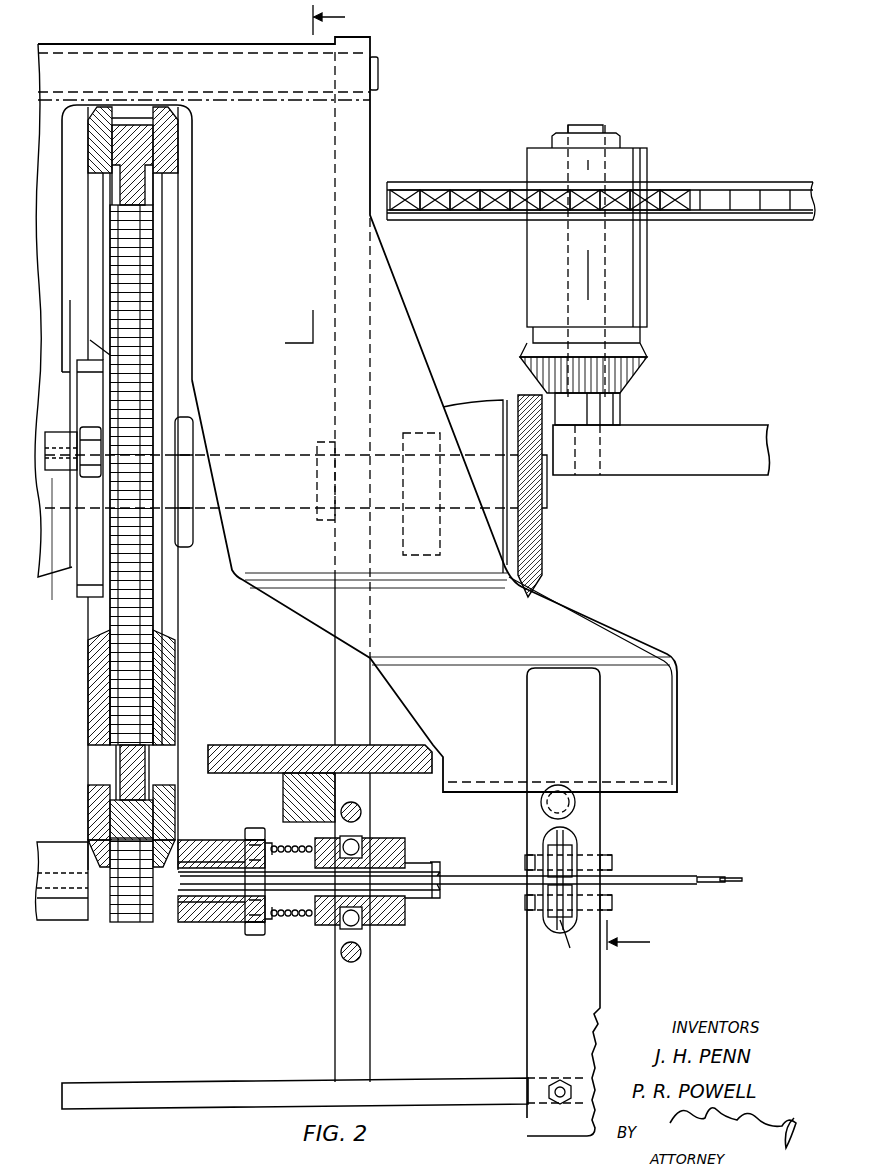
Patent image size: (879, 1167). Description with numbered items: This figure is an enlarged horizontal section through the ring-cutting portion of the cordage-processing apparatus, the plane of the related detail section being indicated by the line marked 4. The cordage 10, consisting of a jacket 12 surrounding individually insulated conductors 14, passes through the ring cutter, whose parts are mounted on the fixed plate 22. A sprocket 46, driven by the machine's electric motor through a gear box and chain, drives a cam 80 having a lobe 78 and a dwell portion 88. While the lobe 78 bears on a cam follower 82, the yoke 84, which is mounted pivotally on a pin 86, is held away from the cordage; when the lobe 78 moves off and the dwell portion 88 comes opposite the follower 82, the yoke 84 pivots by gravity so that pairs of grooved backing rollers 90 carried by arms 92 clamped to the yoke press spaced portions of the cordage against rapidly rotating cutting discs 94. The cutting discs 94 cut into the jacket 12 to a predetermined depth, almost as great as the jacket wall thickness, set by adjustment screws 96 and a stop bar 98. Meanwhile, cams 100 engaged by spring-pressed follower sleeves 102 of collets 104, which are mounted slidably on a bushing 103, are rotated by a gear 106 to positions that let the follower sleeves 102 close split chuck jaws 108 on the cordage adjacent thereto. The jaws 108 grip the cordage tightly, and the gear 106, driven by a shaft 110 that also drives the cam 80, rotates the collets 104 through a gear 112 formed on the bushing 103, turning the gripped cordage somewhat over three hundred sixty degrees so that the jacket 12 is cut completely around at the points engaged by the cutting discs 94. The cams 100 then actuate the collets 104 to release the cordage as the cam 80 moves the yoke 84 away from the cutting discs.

The section line 4- 4 is at (490, 479).
The cordage 10 is at (633, 874).
The jacket 12 is at (682, 876).
The individually insulated conductors 14 is at (725, 877).
The fixed plate 22 is at (240, 745).
The sprocket 46 is at (425, 185).
The lobe 78 is at (80, 360).
The cam 80 is at (74, 583).
The cam follower 82 is at (92, 428).
The yoke 84 is at (550, 602).
The pin 86 is at (378, 72).
The dwell portion 88 is at (107, 603).
The grooved backing rollers 90 is at (545, 912).
The arms 92 is at (527, 990).
The cutting discs 94 is at (567, 948).
The adjustment screws 96 is at (560, 1080).
The stop bar 98 is at (250, 1085).
The cams 100 is at (175, 815).
The spring-pressed follower sleeves 102 is at (205, 924).
The bushing 103 is at (230, 860).
The collets 104 is at (46, 936).
The gear 106 is at (118, 775).
The split chuck jaws 108 is at (440, 902).
The shaft 110 is at (200, 523).
The gear 112 is at (130, 924).